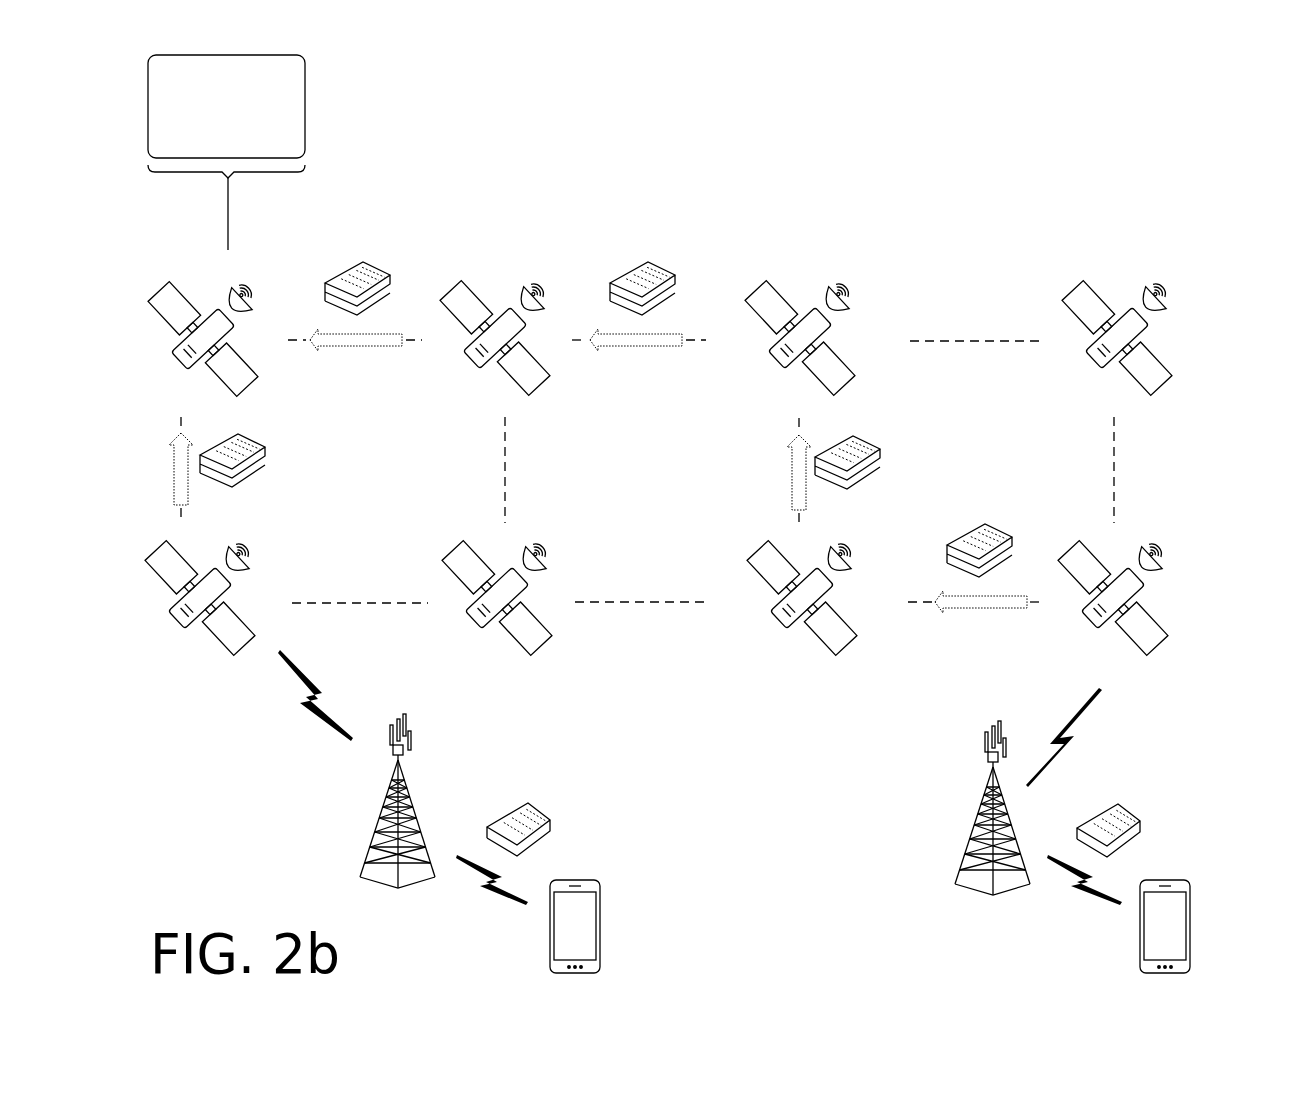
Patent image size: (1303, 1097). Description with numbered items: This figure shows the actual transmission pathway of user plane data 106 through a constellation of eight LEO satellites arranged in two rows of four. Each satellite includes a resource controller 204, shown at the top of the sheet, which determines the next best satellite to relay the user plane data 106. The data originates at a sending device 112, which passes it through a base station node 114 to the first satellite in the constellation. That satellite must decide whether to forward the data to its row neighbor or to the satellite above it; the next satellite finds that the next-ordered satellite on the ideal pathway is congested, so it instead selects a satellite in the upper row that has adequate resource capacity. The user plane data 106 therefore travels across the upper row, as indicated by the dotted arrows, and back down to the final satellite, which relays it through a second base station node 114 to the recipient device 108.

The resource controller 204 is at (226, 152).
The user plane data 106 is at (377, 266).
The base station node 114 is at (390, 797).
The recipient device 108 is at (601, 930).
The sending device 112 is at (1191, 930).